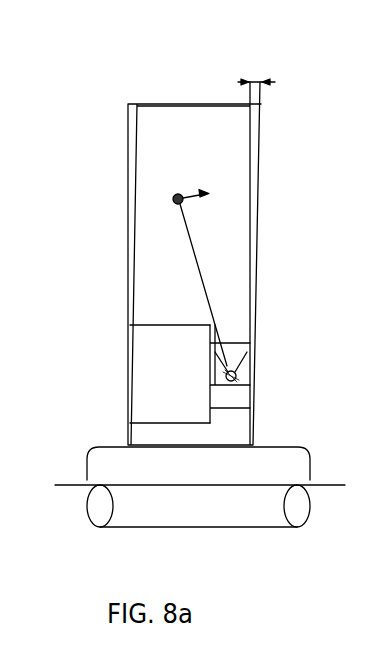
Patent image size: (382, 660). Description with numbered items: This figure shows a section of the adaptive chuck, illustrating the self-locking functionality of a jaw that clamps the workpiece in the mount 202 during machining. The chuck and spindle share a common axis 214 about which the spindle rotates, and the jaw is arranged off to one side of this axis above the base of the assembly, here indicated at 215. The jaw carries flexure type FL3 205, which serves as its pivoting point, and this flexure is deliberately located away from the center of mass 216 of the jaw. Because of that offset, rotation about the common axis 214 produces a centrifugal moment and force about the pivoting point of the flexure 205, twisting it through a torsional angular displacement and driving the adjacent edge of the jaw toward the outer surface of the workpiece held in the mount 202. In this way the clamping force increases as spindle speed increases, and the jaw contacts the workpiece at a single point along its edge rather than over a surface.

The mount 202 is at (163, 131).
The center of mass 216 is at (172, 199).
The flexure FL3 205 is at (210, 386).
The base with wheels 215 is at (255, 447).
The common axis 214 is at (336, 485).